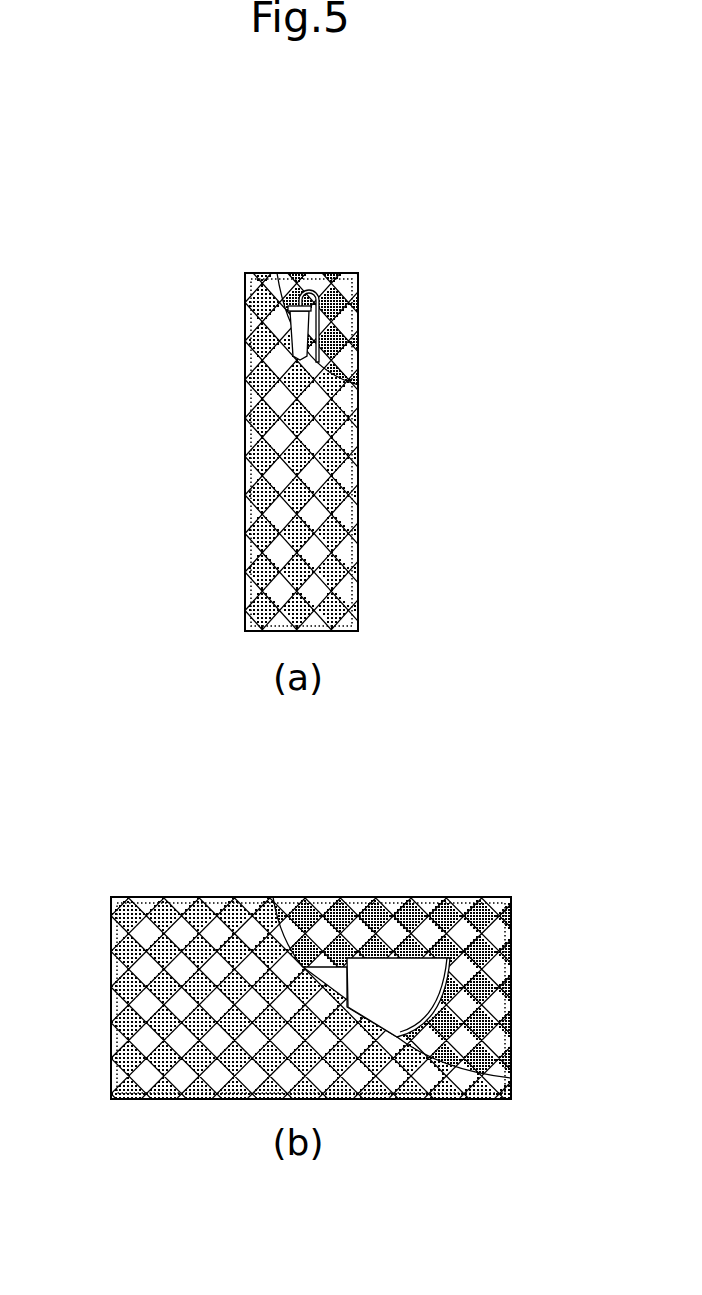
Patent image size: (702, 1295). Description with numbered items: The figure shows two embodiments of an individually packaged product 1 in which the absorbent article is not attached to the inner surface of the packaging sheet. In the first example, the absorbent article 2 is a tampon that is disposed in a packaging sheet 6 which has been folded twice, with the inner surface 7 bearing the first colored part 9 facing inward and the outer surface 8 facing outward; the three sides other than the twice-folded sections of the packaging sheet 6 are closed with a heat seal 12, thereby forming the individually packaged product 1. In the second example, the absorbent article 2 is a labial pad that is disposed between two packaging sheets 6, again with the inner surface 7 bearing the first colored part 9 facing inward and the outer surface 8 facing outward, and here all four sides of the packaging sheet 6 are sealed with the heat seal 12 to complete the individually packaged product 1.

The individually packaged product 1 is at (202, 242).
The absorbent article 2 is at (297, 325).
The packaging sheet 6 is at (361, 260).
The inner surface 7 is at (337, 364).
The outer surface 8 is at (325, 605).
The first colored part 9 is at (342, 325).
The heat seal 12 is at (249, 440).